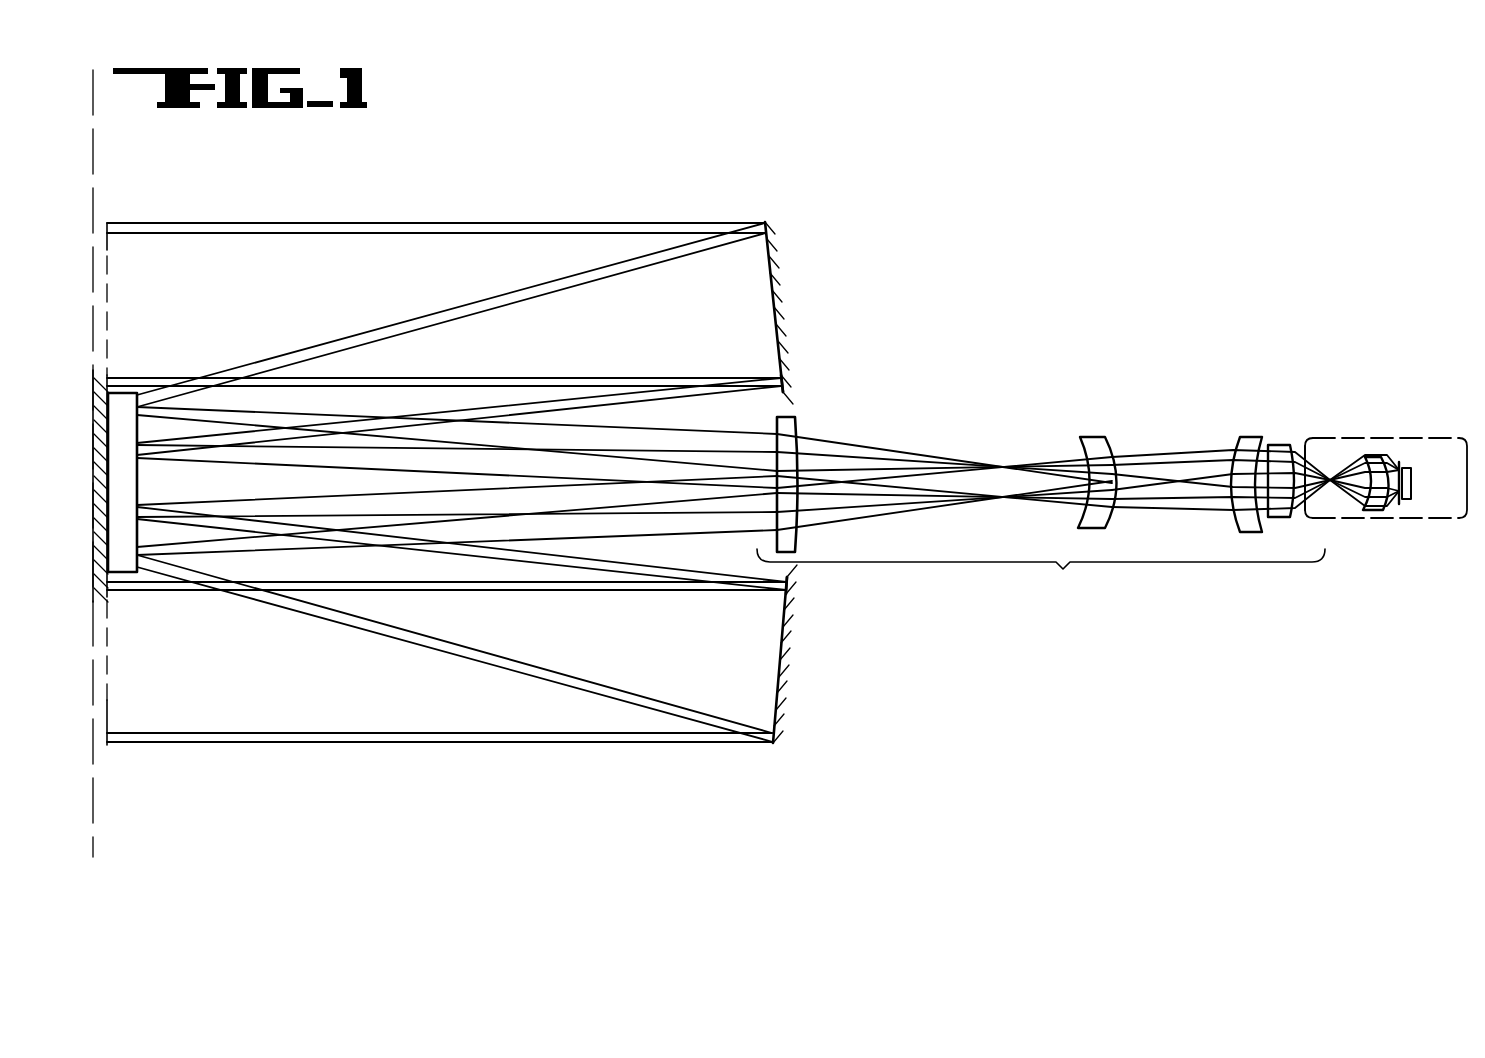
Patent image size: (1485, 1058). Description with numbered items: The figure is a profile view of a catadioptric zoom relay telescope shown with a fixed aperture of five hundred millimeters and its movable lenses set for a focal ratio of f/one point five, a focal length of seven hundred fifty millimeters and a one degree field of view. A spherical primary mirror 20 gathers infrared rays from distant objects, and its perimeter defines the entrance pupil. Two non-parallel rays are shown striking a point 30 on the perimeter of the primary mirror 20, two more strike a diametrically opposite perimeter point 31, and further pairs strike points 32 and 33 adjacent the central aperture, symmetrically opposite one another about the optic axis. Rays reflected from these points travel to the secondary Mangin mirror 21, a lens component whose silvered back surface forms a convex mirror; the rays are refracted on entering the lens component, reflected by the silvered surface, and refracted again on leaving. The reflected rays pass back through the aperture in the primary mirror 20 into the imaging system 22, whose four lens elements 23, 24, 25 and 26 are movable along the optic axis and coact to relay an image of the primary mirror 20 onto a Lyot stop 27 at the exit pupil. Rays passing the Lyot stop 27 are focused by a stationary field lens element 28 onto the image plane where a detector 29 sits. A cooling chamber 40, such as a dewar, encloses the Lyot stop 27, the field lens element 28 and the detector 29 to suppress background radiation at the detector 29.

The spherical primary mirror 20 is at (736, 488).
The secondary Mangin mirror 21 is at (113, 393).
The imaging system 22 is at (1041, 487).
The lens element 23 is at (801, 425).
The lens element 24 is at (1094, 437).
The lens element 25 is at (1250, 437).
The lens element 26 is at (1283, 445).
The Lyot stop 27 is at (1307, 460).
The field lens element 28 is at (1378, 457).
The detector 29 is at (1413, 478).
The point on the perimeter of the primary mirror 30 is at (770, 222).
The point on the perimeter of the primary mirror 31 is at (770, 745).
The point adjacent the aperture in the primary mirror 32 is at (781, 382).
The point adjacent the aperture in the primary mirror 33 is at (781, 585).
The cooling chamber 40 is at (1382, 518).